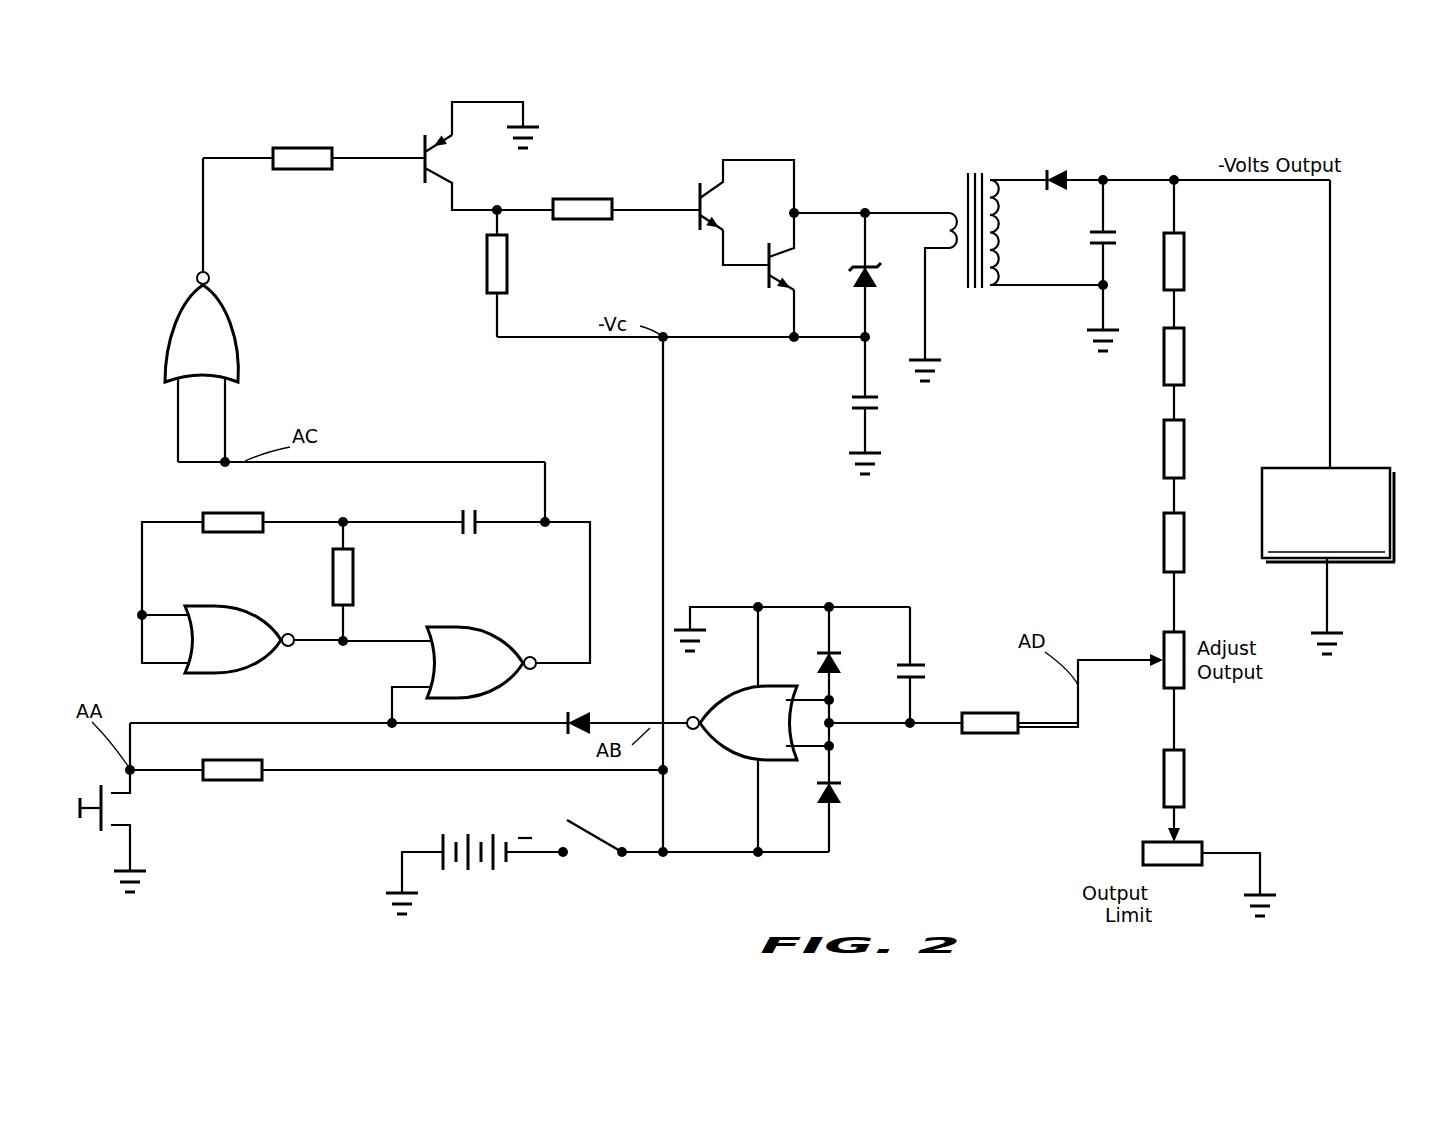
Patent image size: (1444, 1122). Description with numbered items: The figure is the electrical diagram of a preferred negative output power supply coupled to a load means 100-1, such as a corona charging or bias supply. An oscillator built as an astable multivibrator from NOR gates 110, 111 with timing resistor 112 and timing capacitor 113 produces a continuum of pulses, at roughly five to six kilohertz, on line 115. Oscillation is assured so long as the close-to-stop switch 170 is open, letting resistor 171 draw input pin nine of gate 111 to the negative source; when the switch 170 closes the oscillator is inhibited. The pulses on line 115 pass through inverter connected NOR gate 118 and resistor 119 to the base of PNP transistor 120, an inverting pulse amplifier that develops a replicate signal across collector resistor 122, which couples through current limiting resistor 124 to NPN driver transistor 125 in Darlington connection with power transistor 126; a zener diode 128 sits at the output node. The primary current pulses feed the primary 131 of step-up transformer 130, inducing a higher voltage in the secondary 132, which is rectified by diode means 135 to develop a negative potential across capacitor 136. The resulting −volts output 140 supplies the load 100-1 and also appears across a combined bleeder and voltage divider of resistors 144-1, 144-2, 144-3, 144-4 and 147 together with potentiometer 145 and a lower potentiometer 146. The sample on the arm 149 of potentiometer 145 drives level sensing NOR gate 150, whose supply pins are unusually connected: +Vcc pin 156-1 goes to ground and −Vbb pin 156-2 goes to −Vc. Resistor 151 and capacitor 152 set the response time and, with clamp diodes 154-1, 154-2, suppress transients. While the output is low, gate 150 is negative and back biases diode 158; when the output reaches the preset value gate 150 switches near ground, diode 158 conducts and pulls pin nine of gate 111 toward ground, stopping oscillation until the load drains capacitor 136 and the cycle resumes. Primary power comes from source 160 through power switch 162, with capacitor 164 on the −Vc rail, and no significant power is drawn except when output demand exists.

The load means 100-1 is at (1343, 474).
The NOR gate 110 is at (249, 632).
The NOR gate 111 is at (490, 646).
The timing resistor 112 is at (356, 590).
The timing capacitor 113 is at (458, 519).
The line 115 is at (387, 472).
The inverter connected NOR gate 118 is at (222, 338).
The resistor 119 is at (313, 156).
The PNP transistor 120 is at (420, 170).
The collector resistor 122 is at (493, 260).
The current limiting resistor 124 is at (588, 206).
The NPN transistor 125 is at (695, 215).
The power transistor 126 is at (772, 268).
The zener diode 128 is at (869, 266).
The step-up transformer 130 is at (968, 175).
The primary 131 is at (946, 232).
The secondary 132 is at (995, 237).
The diode means 135 is at (1066, 172).
The capacitor 136 is at (1107, 230).
The −volts output 140 is at (1330, 277).
The resistor 144-1 is at (1185, 275).
The resistor 144-2 is at (1228, 365).
The resistor 144-3 is at (1228, 448).
The resistor 144-4 is at (1163, 542).
The potentiometer 145 is at (1180, 690).
The potentiometer 146 is at (1148, 842).
The resistor 147 is at (1185, 793).
The arm 149 is at (1157, 655).
The NOR gate 150 is at (737, 748).
The resistor 151 is at (994, 722).
The capacitor 152 is at (916, 676).
The clamp diode 154-1 is at (838, 667).
The clamp diode 154-2 is at (840, 803).
The +Vcc pin 156-1 is at (757, 681).
The −Vbb pin 156-2 is at (756, 773).
The diode 158 is at (572, 712).
The primary source 160 is at (482, 838).
The power switch 162 is at (598, 840).
The capacitor 164 is at (870, 412).
The switch 170 is at (124, 797).
The resistor 171 is at (228, 772).